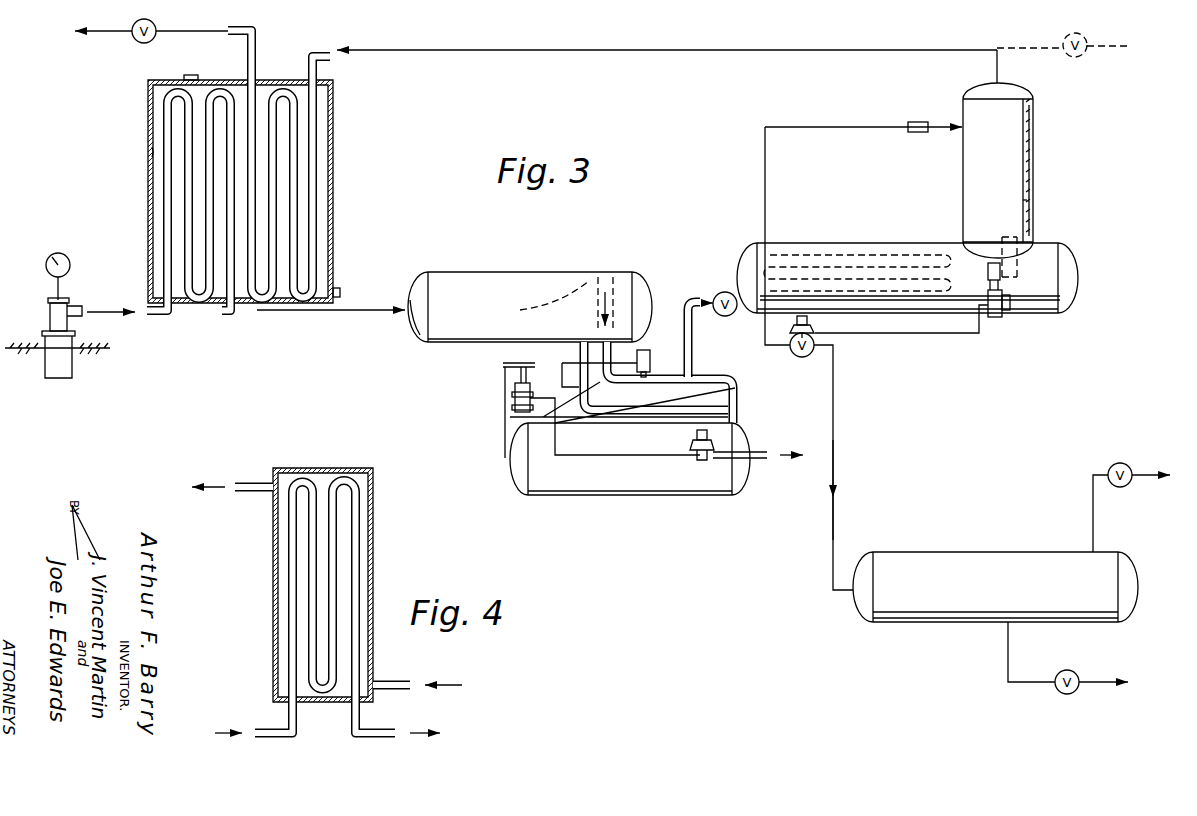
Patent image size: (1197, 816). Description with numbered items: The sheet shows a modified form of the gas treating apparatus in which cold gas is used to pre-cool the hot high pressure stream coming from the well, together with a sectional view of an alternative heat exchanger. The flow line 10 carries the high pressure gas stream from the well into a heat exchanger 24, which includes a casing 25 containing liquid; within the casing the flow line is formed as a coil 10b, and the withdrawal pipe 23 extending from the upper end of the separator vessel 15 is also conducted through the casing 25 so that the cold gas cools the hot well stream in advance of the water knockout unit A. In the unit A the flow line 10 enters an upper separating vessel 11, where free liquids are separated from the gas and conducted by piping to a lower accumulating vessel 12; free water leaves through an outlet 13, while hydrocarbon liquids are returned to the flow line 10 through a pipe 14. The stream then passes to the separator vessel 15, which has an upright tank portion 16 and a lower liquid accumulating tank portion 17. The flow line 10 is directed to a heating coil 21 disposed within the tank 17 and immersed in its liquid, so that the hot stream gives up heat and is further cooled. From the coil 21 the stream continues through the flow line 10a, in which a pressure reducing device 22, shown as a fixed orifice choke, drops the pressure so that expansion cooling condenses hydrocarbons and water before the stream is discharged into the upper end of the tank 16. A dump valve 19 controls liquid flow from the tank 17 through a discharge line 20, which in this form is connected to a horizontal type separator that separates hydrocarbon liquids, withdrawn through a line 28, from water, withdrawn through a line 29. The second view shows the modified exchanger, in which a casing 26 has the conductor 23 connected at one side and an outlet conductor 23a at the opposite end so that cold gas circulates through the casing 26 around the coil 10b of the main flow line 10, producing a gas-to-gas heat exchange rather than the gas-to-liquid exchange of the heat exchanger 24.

In FIG. 3, the flow line 10 is at (154, 318).
In FIG. 4, the flow line 10 is at (262, 729).
In FIG. 3, the flow line 10a is at (764, 204).
In FIG. 3, the coil 10b is at (166, 203).
In FIG. 4, the coil 10b is at (288, 556).
In FIG. 3, the upper separating vessel 11 is at (456, 344).
In FIG. 3, the lower accumulating vessel 12 is at (585, 497).
In FIG. 3, the outlet 13 is at (767, 461).
In FIG. 3, the pipe 14 is at (733, 400).
In FIG. 3, the separator vessel 15 is at (1036, 113).
In FIG. 3, the upright tank portion 16 is at (1026, 196).
In FIG. 3, the lower liquid accumulating tank portion 17 is at (975, 335).
In FIG. 3, the dump valve 19 is at (812, 331).
In FIG. 3, the discharge line 20 is at (838, 441).
In FIG. 3, the heating coil 21 is at (945, 552).
In FIG. 3, the pressure reducing device 22 is at (909, 122).
In FIG. 3, the withdrawal pipe 23 is at (893, 48).
In FIG. 4, the withdrawal pipe 23 is at (390, 683).
In FIG. 4, the outlet conductor 23a is at (245, 482).
In FIG. 3, the heat exchanger 24 is at (334, 123).
In FIG. 3, the casing 25 is at (150, 152).
In FIG. 4, the casing 26 is at (316, 468).
In FIG. 3, the line 28 is at (1094, 531).
In FIG. 3, the line 29 is at (1006, 643).
In FIG. 3, the water knockout unit A is at (497, 272).